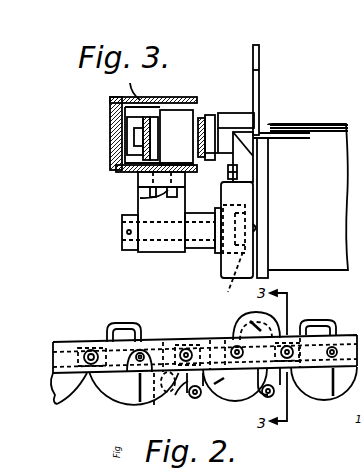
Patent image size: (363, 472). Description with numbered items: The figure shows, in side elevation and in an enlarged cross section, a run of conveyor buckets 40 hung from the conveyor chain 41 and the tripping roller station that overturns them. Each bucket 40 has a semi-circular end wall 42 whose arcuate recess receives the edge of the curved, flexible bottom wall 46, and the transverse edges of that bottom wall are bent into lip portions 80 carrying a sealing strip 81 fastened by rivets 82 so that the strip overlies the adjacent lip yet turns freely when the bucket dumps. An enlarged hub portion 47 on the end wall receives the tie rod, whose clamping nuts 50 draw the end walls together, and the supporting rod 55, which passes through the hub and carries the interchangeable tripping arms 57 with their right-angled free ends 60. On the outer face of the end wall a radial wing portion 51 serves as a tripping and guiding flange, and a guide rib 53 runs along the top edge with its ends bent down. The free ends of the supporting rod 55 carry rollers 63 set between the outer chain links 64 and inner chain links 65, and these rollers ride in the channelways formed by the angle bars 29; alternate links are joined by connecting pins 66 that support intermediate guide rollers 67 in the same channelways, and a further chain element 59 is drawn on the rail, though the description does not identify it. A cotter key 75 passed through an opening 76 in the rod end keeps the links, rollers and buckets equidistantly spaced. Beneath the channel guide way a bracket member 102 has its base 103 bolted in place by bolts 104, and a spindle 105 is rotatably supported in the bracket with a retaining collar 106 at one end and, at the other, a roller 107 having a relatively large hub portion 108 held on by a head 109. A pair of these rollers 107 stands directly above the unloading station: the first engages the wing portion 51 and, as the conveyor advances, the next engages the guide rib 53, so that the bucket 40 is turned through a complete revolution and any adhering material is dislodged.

In FIG. 3, the angle bars 29 is at (152, 100).
In FIG. 2, the angle bars 29 is at (75, 342).
In FIG. 3, the bucket 40 is at (334, 256).
In FIG. 2, the bucket 40 is at (122, 403).
In FIG. 2, the conveyor chain 41 is at (154, 405).
In FIG. 3, the end wall 42 is at (256, 230).
In FIG. 2, the end wall 42 is at (118, 390).
In FIG. 3, the bottom wall 46 is at (318, 270).
In FIG. 3, the hub portion 47 is at (212, 115).
In FIG. 3, the clamping nuts 50 is at (228, 173).
In FIG. 3, the wing portion 51 is at (225, 278).
In FIG. 2, the wing portion 51 is at (258, 330).
In FIG. 3, the guide rib 53 is at (234, 113).
In FIG. 2, the guide rib 53 is at (247, 314).
In FIG. 3, the supporting rod 55 is at (116, 146).
In FIG. 2, the supporting rod 55 is at (225, 383).
In FIG. 3, the tripping arms 57 is at (262, 97).
In FIG. 2, the tripping arms 57 is at (148, 341).
In FIG. 2, the bolt 59 is at (235, 345).
In FIG. 3, the free ends of tripping arms 60 is at (262, 61).
In FIG. 2, the free ends of tripping arms 60 is at (116, 322).
In FIG. 3, the rollers 63 is at (176, 137).
In FIG. 2, the rollers 63 is at (238, 330).
In FIG. 3, the outer chain links 64 is at (128, 89).
In FIG. 3, the inner chain links 65 is at (201, 118).
In FIG. 2, the connecting pins 66 is at (188, 347).
In FIG. 2, the intermediate guide rollers 67 is at (167, 382).
In FIG. 3, the cotter key 75 is at (134, 137).
In FIG. 3, the opening 76 is at (127, 127).
In FIG. 3, the lip portions 80 is at (330, 132).
In FIG. 3, the sealing strip 81 is at (312, 127).
In FIG. 3, the rivets 82 is at (274, 137).
In FIG. 3, the bracket member 102 is at (140, 198).
In FIG. 2, the bracket member 102 is at (180, 390).
In FIG. 3, the base 103 is at (140, 184).
In FIG. 3, the bolts 104 is at (138, 208).
In FIG. 3, the spindle 105 is at (165, 252).
In FIG. 3, the retaining collar 106 is at (127, 250).
In FIG. 3, the roller 107 is at (220, 253).
In FIG. 2, the roller 107 is at (194, 399).
In FIG. 3, the hub portion 108 is at (196, 213).
In FIG. 2, the head 109 is at (245, 313).